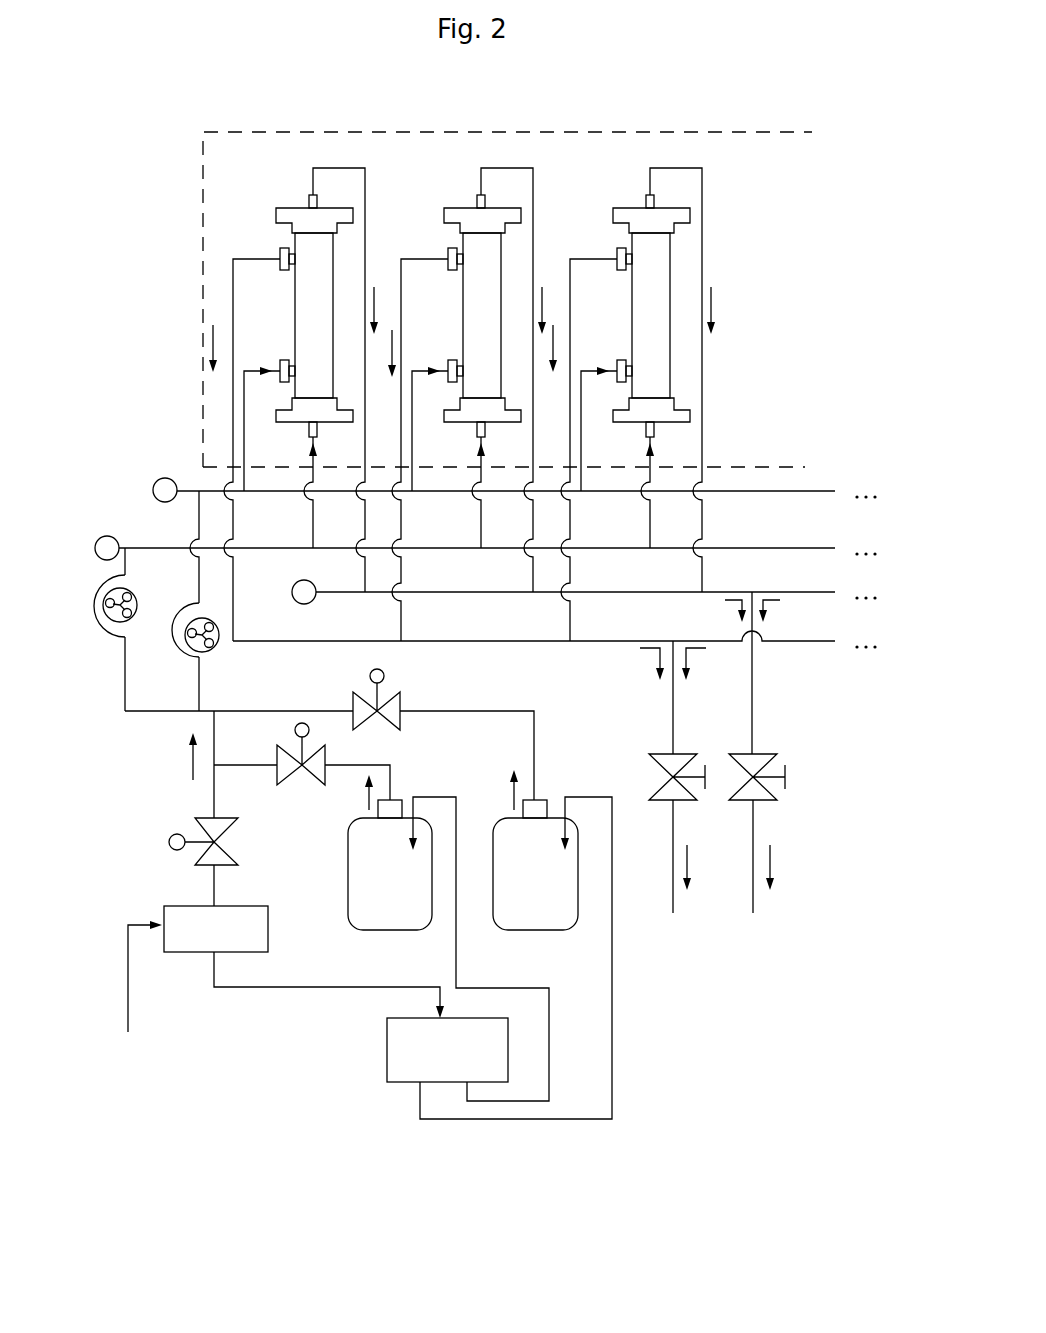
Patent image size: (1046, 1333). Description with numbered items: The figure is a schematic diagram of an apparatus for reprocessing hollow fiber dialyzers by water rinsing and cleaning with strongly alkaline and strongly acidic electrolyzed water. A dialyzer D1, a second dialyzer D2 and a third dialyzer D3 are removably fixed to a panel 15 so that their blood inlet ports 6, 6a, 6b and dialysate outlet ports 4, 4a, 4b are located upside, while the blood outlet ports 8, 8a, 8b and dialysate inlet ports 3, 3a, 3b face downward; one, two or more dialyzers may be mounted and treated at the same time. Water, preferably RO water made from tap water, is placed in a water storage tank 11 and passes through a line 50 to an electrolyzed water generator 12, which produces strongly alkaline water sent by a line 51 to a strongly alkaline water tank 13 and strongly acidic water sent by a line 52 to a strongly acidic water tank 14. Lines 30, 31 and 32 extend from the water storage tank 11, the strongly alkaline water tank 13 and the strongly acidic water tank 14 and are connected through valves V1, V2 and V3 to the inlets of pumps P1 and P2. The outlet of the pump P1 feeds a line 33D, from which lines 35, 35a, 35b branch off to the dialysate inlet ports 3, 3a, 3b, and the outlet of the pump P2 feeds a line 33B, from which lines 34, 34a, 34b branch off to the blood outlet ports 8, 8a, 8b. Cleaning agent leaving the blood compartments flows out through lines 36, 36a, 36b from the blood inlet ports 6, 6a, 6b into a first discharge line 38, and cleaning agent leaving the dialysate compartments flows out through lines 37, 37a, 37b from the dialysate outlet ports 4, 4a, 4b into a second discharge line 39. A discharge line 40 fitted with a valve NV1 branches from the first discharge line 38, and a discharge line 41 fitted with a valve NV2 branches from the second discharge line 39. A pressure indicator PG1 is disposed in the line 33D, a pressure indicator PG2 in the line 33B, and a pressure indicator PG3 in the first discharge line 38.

The panel 15 is at (196, 229).
The blood inlet port 6 is at (323, 197).
The blood inlet port 6a is at (498, 197).
The blood inlet port 6b is at (667, 197).
The blood outlet port 8 is at (323, 441).
The blood outlet port 8a is at (498, 441).
The blood outlet port 8b is at (667, 441).
The dialysate outlet port 4 is at (283, 279).
The dialysate outlet port 4a is at (450, 279).
The dialysate outlet port 4b is at (617, 279).
The dialysate inlet port 3 is at (283, 359).
The dialysate inlet port 3a is at (448, 359).
The dialysate inlet port 3b is at (614, 359).
The dialyzer D1 is at (314, 315).
The second dialyzer D2 is at (482, 315).
The third dialyzer D3 is at (651, 315).
The line 35 is at (262, 429).
The line 35a is at (435, 429).
The line 35b is at (604, 429).
The line 36 is at (356, 380).
The line 36a is at (531, 380).
The line 36b is at (703, 380).
The line 37 is at (244, 450).
The line 37a is at (418, 450).
The line 37b is at (583, 450).
The line 34 is at (326, 492).
The line 34a is at (460, 492).
The line 34b is at (628, 492).
The line 33D is at (492, 550).
The line 33B is at (477, 553).
The first discharge line 38 is at (575, 608).
The second discharge line 39 is at (534, 653).
The pressure indicator PG1 is at (163, 476).
The pressure indicator PG2 is at (111, 534).
The pressure indicator PG3 is at (301, 580).
The pump P1 is at (205, 657).
The pump P2 is at (126, 643).
The discharge line 40 is at (755, 752).
The discharge line 41 is at (672, 777).
The valve NV1 is at (769, 763).
The valve NV2 is at (687, 763).
The valve V1 is at (186, 841).
The valve V2 is at (269, 770).
The valve V3 is at (376, 715).
The line 30 is at (239, 764).
The line 31 is at (357, 787).
The line 32 is at (484, 760).
The water storage tank 11 is at (181, 969).
The electrolyzed water generator 12 is at (429, 1050).
The strongly alkaline water tank 13 is at (390, 882).
The strongly acidic water tank 14 is at (535, 882).
The line 50 is at (329, 987).
The line 51 is at (496, 949).
The line 52 is at (537, 958).